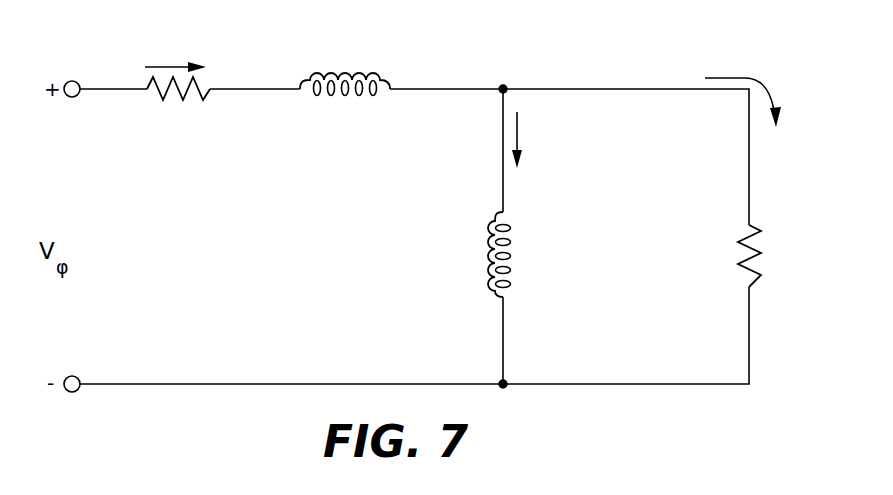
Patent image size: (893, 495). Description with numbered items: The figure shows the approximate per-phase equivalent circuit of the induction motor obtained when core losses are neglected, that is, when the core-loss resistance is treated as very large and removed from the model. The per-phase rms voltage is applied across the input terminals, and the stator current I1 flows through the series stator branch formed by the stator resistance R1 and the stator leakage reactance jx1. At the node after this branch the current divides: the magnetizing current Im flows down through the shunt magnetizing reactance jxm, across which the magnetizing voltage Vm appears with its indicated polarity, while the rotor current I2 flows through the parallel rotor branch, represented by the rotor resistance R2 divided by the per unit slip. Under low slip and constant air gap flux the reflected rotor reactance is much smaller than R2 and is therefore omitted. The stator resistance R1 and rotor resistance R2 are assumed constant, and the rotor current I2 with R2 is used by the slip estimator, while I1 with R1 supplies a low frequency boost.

The stator resistance R1 is at (178, 109).
The stator leakage reactance jx1 is at (345, 106).
The magnetizing reactance jxm is at (523, 254).
The rotor resistance R2 is at (812, 260).
The stator current I1 is at (173, 51).
The magnetizing current Im is at (534, 140).
The rotor current I2 is at (744, 94).
The magnetizing voltage Vm is at (457, 250).